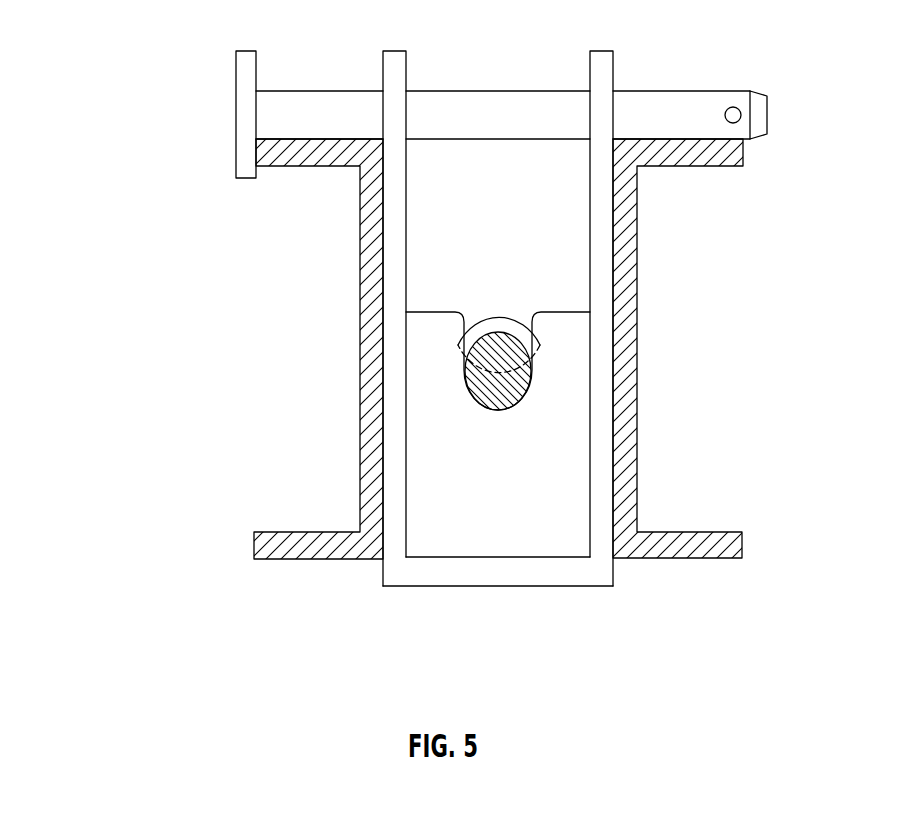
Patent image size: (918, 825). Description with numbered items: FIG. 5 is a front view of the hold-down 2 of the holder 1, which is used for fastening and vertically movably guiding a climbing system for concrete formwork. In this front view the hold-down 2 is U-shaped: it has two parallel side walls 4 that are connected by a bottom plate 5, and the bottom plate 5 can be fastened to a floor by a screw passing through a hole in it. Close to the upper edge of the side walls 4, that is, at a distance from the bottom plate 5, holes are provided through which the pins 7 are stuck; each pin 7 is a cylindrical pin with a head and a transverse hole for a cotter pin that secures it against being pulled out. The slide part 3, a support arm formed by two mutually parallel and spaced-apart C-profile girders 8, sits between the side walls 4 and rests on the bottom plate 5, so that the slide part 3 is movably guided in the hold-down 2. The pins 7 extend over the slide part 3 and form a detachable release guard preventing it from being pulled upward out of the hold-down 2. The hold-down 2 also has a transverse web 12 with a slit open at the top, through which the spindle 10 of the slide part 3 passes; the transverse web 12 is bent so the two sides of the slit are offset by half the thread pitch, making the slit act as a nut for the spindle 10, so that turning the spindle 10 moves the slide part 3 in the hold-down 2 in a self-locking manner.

The holder 1 is at (184, 363).
The hold-down 2 is at (499, 361).
The slide part 3 is at (498, 349).
The side walls 4 is at (393, 236).
The bottom plate 5 is at (462, 570).
The pins 7 is at (690, 116).
The C-profile girders 8 is at (373, 335).
The spindle 10 is at (495, 373).
The transverse web 12 is at (517, 523).